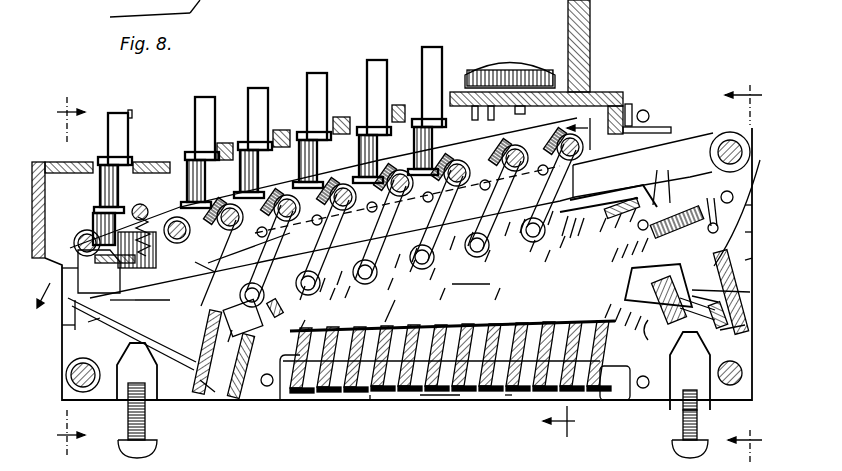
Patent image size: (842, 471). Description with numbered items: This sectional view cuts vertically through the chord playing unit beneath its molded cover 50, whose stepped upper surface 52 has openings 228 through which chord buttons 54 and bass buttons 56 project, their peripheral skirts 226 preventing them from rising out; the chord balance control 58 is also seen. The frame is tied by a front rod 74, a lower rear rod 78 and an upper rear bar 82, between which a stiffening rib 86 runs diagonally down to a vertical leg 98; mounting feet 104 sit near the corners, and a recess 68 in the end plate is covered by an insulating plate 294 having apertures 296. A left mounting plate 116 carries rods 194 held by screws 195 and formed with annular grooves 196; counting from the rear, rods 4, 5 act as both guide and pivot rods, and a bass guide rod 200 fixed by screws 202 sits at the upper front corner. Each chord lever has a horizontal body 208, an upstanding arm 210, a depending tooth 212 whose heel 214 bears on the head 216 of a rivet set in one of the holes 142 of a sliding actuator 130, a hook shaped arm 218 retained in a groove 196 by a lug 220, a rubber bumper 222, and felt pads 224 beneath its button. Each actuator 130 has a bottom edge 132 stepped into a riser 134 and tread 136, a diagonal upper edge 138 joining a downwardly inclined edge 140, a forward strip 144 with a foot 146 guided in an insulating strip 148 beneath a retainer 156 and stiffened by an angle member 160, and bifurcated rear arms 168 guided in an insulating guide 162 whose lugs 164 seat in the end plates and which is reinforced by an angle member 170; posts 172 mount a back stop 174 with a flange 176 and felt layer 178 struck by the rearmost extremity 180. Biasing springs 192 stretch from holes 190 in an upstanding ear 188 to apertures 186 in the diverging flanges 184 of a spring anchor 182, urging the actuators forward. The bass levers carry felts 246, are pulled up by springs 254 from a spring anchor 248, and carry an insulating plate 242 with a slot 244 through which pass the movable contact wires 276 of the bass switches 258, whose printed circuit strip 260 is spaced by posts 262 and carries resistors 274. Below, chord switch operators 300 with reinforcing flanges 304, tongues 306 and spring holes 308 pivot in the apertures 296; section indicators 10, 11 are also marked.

The rod (fourth from rear) 4 is at (61, 277).
The rod (fifth from rear) 5 is at (753, 261).
The section line 10- 10 is at (577, 277).
The section line 11- 11 is at (127, 312).
The cover 50 is at (38, 163).
The stepped upper surface 52 is at (420, 75).
The chord playing buttons 54 is at (365, 77).
The bass buttons 56 is at (117, 113).
The chord balance control 58 is at (520, 58).
The recesses 68 is at (622, 400).
The front rod 74 is at (66, 373).
The lower rear bar or rod 78 is at (732, 386).
The upper rear bar 82 is at (725, 133).
The longitudinal stiffening rib 86 is at (672, 140).
The leg 98 is at (62, 326).
The mounting feet or brackets 104 is at (128, 372).
The left mounting plate 116 is at (590, 85).
The sliding switch actuators 130 is at (432, 255).
The bottom edge 132 is at (458, 299).
The riser portion 134 is at (512, 299).
The tread portion 136 is at (545, 262).
The upper edge 138 is at (548, 176).
The downwardly inclined upper edge 140 is at (605, 269).
The holes 142 is at (410, 272).
The forwardly extending strip 144 is at (272, 296).
The foot 146 is at (287, 405).
The insulating strip (guide) 148 is at (248, 418).
The insulating retainer 156 is at (322, 316).
The metal angle member 160 is at (238, 397).
The insulating guide 162 is at (752, 205).
The tongues or lugs 164 is at (625, 292).
The arms 168 is at (628, 275).
The reinforcing metal angle member 170 is at (746, 278).
The posts 172 is at (748, 312).
The back stop 174 is at (750, 292).
The reinforcing flange 176 is at (745, 325).
The felt layer 178 is at (752, 258).
The rearmost extremity 180 is at (752, 232).
The spring anchor 182 is at (605, 206).
The diverging flanges 184 is at (662, 178).
The apertures 186 is at (544, 435).
The upstanding ear 188 is at (752, 209).
The holes 190 is at (725, 200).
The biasing springs 192 is at (678, 212).
The rods 194 is at (487, 134).
The screws 195 is at (467, 209).
The annular grooves 196 is at (246, 435).
The bass guide rod 200 is at (62, 268).
The screws 202 is at (78, 215).
The horizontal body 208 is at (215, 272).
The upstanding arm 210 is at (200, 152).
The depending tooth 212 is at (288, 251).
The heel 214 is at (347, 240).
The head 216 is at (520, 245).
The hook shaped arm 218 is at (608, 188).
The lug 220 is at (545, 153).
The rubber stop or bumper 222 is at (245, 263).
The felt pads 224 is at (100, 162).
The peripheral skirts 226 is at (368, 133).
The openings 228 is at (186, 150).
The insulating strip or plate 242 is at (92, 322).
The horizontal slot 244 is at (157, 300).
The felts 246 is at (146, 118).
The spring anchor 248 is at (150, 165).
The springs 254 is at (117, 262).
The bass switches 258 is at (193, 408).
The insulating panel or strip 260 is at (202, 318).
The posts 262 is at (208, 395).
The resistors 274 is at (210, 348).
The movable switch contact wires 276 is at (124, 304).
The insulating plate 294 is at (318, 395).
The apertures 296 is at (508, 395).
The chord switch operators 300 is at (460, 395).
The reinforcing flanges 304 is at (370, 395).
The lugs or tongues 306 is at (395, 296).
The holes 308 is at (630, 304).